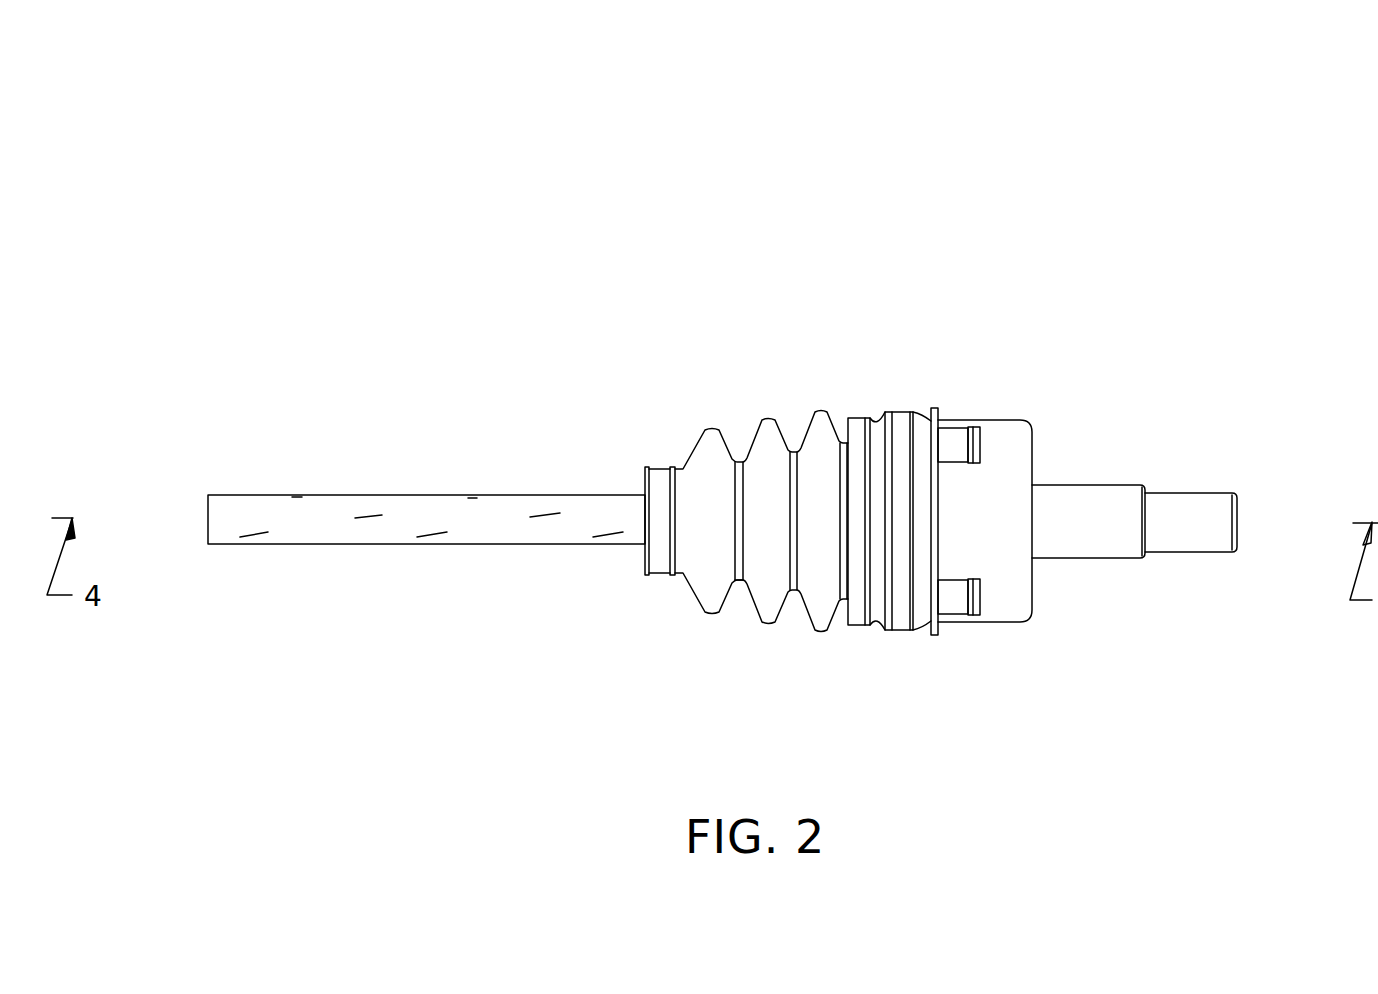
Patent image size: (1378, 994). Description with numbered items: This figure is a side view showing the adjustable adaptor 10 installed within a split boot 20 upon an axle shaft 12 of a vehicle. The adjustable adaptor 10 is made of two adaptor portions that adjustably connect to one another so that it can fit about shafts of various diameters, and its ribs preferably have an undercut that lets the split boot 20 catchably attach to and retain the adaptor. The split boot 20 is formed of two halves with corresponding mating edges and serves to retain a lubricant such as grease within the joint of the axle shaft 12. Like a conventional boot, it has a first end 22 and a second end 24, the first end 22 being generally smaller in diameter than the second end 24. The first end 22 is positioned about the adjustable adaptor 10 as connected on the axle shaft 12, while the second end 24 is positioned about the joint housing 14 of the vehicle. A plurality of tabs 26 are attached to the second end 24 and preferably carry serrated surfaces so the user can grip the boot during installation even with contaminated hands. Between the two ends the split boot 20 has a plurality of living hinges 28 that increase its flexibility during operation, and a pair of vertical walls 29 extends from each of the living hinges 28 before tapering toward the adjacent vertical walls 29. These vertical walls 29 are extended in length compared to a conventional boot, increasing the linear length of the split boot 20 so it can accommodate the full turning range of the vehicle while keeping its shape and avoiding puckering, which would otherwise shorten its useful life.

The adjustable adaptor 10 is at (1107, 188).
The axle shaft 12 is at (384, 517).
The joint housing 14 is at (1005, 442).
The split boot 20 is at (823, 407).
The first end 22 is at (660, 478).
The second end 24 is at (923, 428).
The tabs 26 is at (950, 597).
The living hinges 28 is at (737, 580).
The vertical walls 29 is at (736, 462).